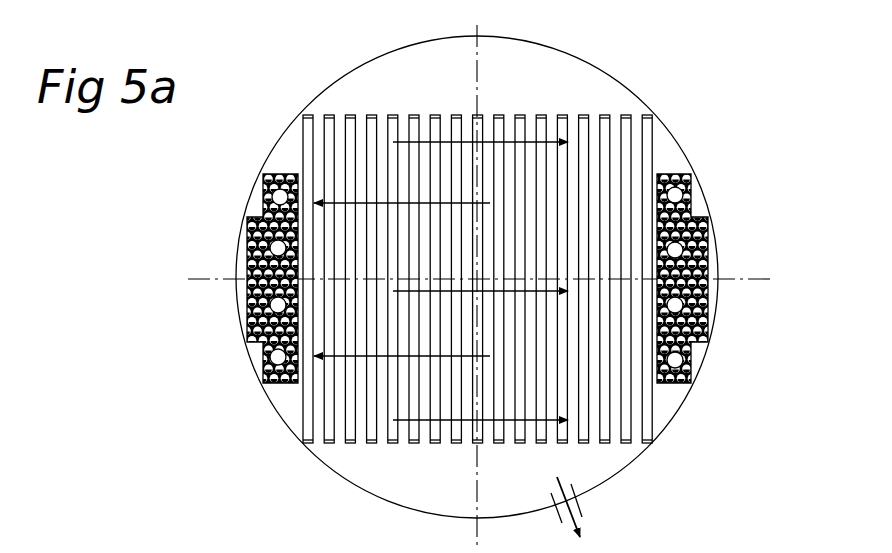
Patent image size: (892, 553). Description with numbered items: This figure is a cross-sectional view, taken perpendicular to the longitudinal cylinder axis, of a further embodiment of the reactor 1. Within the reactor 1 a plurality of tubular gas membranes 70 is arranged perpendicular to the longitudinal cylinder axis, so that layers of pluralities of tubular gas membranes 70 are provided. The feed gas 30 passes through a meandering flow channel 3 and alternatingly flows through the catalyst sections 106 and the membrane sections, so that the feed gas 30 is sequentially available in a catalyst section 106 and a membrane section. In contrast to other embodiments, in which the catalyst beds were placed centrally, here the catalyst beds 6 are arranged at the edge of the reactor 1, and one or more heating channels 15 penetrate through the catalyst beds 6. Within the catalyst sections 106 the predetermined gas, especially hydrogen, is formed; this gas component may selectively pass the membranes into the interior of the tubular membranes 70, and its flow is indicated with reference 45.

The reactor 1 is at (310, 473).
The flow channel 3 is at (330, 127).
The catalyst bed 6 is at (708, 328).
The heating channel 15 is at (280, 198).
The feed gas 30 is at (445, 143).
The flow of gas component 45 is at (575, 517).
The tubular gas membrane 70 is at (596, 140).
The catalyst section 106 is at (253, 332).